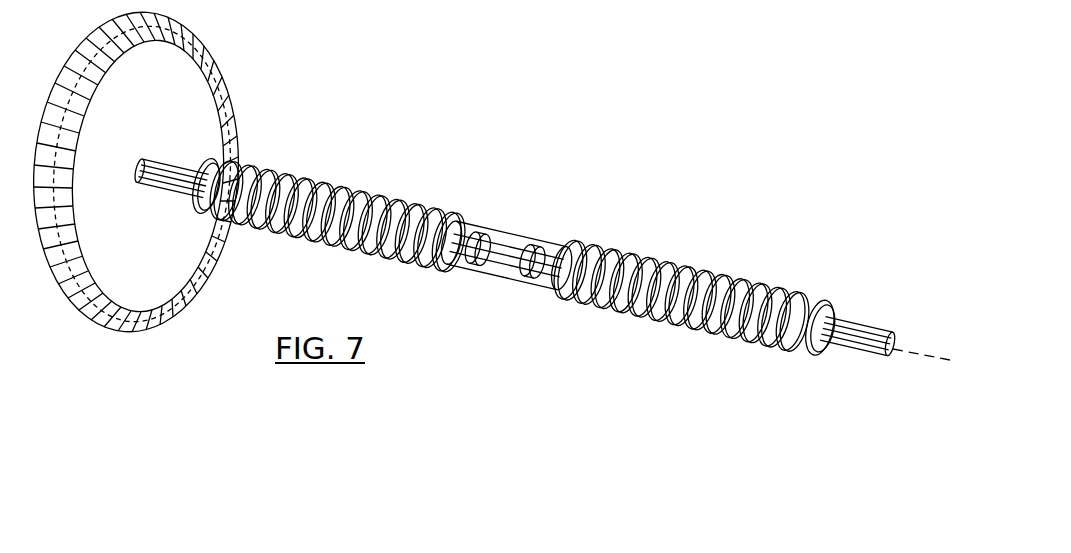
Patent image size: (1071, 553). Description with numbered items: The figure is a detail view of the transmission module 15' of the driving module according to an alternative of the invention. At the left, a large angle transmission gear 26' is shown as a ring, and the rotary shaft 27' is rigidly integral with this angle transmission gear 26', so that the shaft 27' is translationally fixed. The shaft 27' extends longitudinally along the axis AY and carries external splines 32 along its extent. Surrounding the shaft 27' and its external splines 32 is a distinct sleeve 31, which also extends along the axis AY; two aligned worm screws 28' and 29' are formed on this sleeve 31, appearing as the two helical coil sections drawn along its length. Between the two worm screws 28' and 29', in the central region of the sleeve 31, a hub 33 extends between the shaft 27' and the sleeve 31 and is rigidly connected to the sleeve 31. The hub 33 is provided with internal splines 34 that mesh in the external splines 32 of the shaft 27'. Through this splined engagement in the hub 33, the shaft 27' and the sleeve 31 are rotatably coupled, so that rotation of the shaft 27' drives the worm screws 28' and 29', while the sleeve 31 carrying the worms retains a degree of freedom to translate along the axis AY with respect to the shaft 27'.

The transmission module 15' is at (486, 234).
The angle transmission gear 26' is at (157, 171).
The rotary shaft 27' is at (171, 213).
The worm screw 28' is at (329, 168).
The worm screw 29' is at (681, 250).
The sleeve 31 is at (812, 302).
The external splines 32 is at (877, 335).
The hub 33 is at (513, 280).
The internal splines 34 is at (512, 262).
The axis AY is at (918, 352).